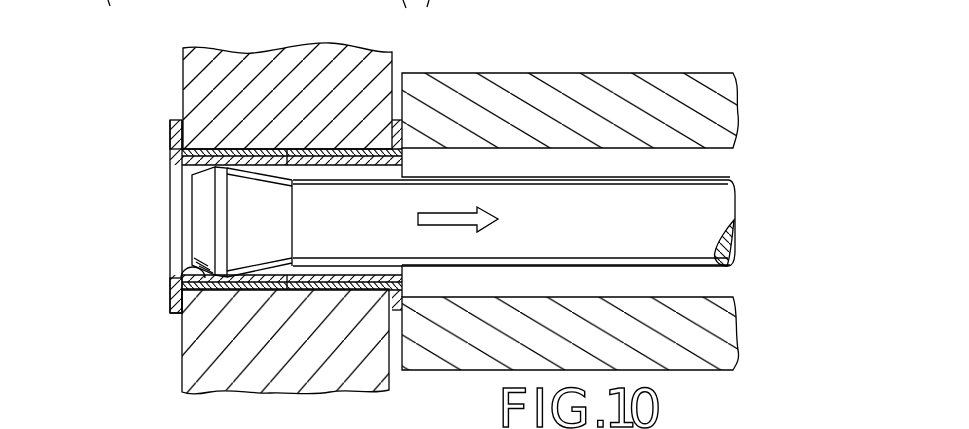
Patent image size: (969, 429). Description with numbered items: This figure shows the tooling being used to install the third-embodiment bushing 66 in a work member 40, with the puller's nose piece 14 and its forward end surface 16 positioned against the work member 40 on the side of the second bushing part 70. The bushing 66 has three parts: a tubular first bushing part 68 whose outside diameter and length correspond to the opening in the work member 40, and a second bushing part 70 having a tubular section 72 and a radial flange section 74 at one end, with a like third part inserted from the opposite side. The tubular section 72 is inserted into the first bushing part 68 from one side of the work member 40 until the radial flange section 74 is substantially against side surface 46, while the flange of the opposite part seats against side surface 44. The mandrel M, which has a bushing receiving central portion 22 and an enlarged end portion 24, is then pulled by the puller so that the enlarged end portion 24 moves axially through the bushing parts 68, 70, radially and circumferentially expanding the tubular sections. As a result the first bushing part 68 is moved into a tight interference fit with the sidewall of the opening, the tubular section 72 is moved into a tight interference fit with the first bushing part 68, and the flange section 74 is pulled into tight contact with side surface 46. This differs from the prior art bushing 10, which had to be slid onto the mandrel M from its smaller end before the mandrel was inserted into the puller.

The bushing 10 is at (812, 0).
The nose piece 14 is at (502, 78).
The forward end surface 16 is at (397, 87).
The bushing receiving central portion 22 is at (543, 197).
The enlarged end portion 24 is at (192, 218).
The work member 40 is at (255, 60).
The side surface 44 is at (390, 373).
The side surface 46 is at (175, 362).
The bushing 66 is at (157, 270).
The first bushing part 68 is at (337, 285).
The second bushing part 70 is at (158, 180).
The tubular section 72 is at (173, 294).
The radial flange section 74 is at (170, 137).
The mandrel M is at (712, 177).